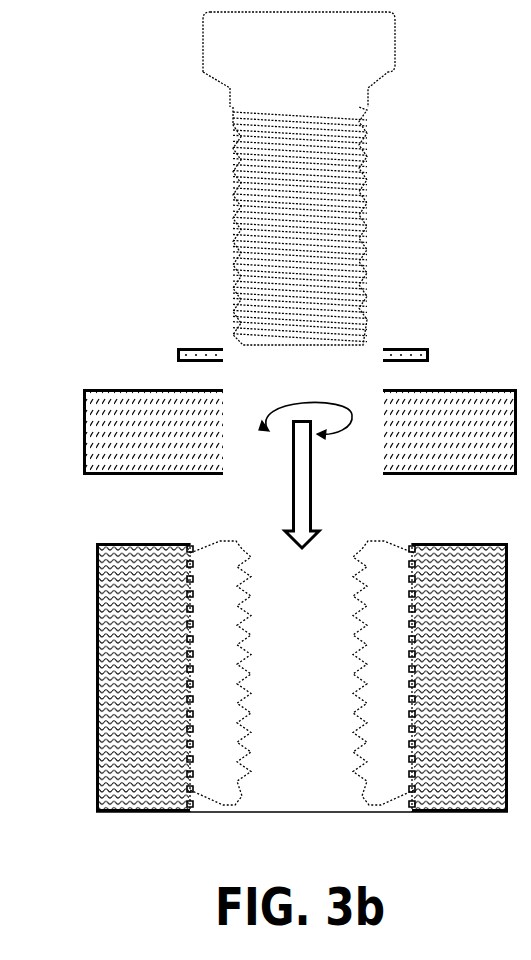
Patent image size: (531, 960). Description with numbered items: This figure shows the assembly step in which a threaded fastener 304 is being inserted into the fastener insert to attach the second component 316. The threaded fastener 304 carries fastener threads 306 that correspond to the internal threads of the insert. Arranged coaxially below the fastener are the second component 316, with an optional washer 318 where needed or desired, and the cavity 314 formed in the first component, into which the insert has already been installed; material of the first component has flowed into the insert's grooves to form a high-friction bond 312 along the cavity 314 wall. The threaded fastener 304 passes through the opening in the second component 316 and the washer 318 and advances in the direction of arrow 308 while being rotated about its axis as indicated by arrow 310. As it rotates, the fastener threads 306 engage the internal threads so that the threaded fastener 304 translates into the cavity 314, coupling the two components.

The threaded fastener 304 is at (203, 40).
The fastener threads 306 is at (233, 172).
The arrow 308 is at (301, 552).
The arrow 310 is at (266, 434).
The high-friction bond 312 is at (190, 545).
The cavity 314 is at (303, 788).
The second component 316 is at (83, 432).
The washer 318 is at (177, 352).